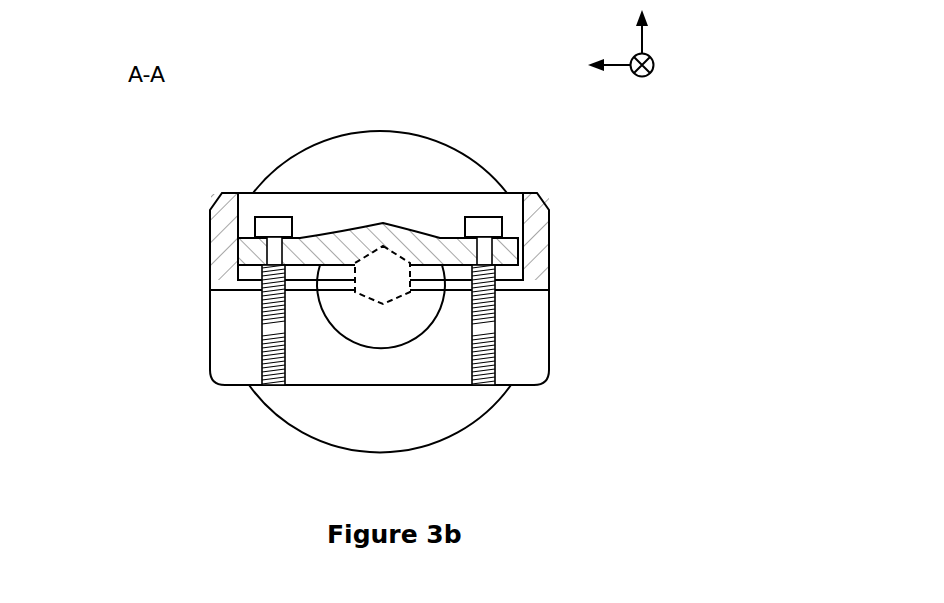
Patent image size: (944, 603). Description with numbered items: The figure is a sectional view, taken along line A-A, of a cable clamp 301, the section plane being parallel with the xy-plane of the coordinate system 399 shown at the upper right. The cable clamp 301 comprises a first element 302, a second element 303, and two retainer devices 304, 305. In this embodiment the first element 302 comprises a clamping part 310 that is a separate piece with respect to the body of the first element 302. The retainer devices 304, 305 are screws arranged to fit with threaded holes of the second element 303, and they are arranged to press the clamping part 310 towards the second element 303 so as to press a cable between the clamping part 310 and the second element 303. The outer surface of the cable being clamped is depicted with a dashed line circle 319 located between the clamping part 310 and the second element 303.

The cable clamp 301 is at (100, 297).
The first element 302 is at (210, 243).
The second element 303 is at (549, 343).
The retainer device 304 is at (487, 216).
The retainer device 305 is at (270, 216).
The clamping part 310 is at (304, 237).
The dashed line circle 319 is at (356, 279).
The coordinate system 399 is at (620, 47).